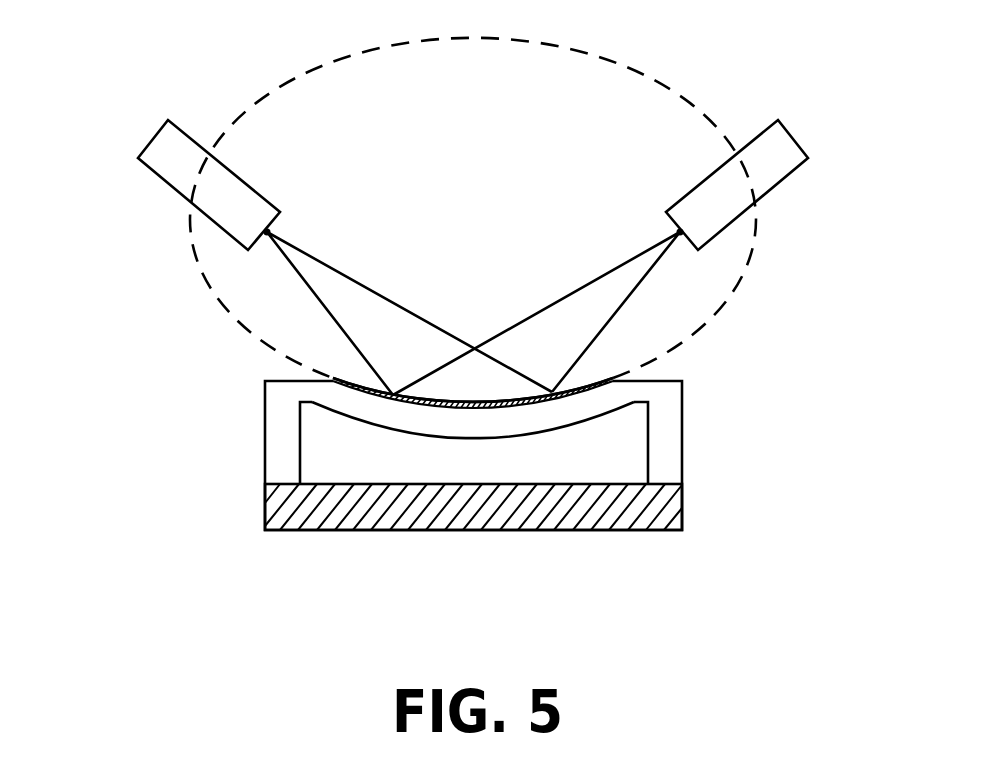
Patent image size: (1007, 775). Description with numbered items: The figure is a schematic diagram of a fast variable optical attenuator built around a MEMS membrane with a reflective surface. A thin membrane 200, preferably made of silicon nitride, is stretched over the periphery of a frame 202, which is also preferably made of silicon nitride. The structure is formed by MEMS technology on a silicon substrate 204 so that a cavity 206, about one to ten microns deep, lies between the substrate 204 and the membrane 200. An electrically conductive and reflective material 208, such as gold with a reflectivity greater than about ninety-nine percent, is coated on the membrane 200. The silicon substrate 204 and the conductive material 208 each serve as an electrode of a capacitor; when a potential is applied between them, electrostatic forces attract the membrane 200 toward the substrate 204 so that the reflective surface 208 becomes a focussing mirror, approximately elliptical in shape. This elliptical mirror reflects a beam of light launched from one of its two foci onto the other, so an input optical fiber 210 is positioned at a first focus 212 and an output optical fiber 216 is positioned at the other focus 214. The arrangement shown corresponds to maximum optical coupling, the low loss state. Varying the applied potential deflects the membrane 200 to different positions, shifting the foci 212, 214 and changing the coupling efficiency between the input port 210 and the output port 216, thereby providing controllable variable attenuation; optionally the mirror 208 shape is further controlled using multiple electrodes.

The membrane 200 is at (597, 405).
The frame 202 is at (682, 473).
The silicon substrate 204 is at (265, 513).
The cavity 206 is at (312, 454).
The conductive and reflective material 208 is at (590, 380).
The input optical fiber 210 is at (197, 141).
The first focus 212 is at (267, 232).
The second focus 214 is at (680, 232).
The output optical fiber 216 is at (757, 135).